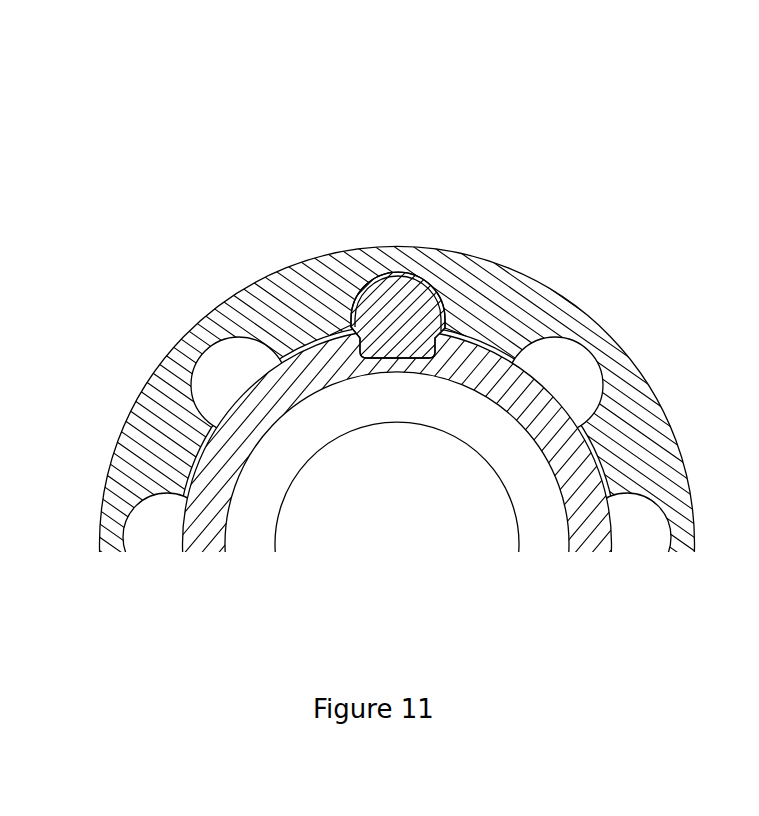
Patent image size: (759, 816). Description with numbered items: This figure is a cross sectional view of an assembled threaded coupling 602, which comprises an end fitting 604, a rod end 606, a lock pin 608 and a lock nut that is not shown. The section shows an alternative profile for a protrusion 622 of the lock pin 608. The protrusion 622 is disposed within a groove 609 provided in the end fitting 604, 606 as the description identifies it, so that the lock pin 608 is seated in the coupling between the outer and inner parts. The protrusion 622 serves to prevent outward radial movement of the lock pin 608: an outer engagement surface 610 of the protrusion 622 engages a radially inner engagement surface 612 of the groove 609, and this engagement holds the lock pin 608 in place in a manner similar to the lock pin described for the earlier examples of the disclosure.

The threaded coupling 602 is at (379, 452).
The end fitting 604 is at (320, 302).
The rod end 606 is at (495, 372).
The lock pin 608 is at (457, 244).
The groove 609 is at (349, 320).
The outer engagement surface 610 is at (417, 283).
The radially inner engagement surface 612 is at (398, 274).
The protrusion 622 is at (387, 320).